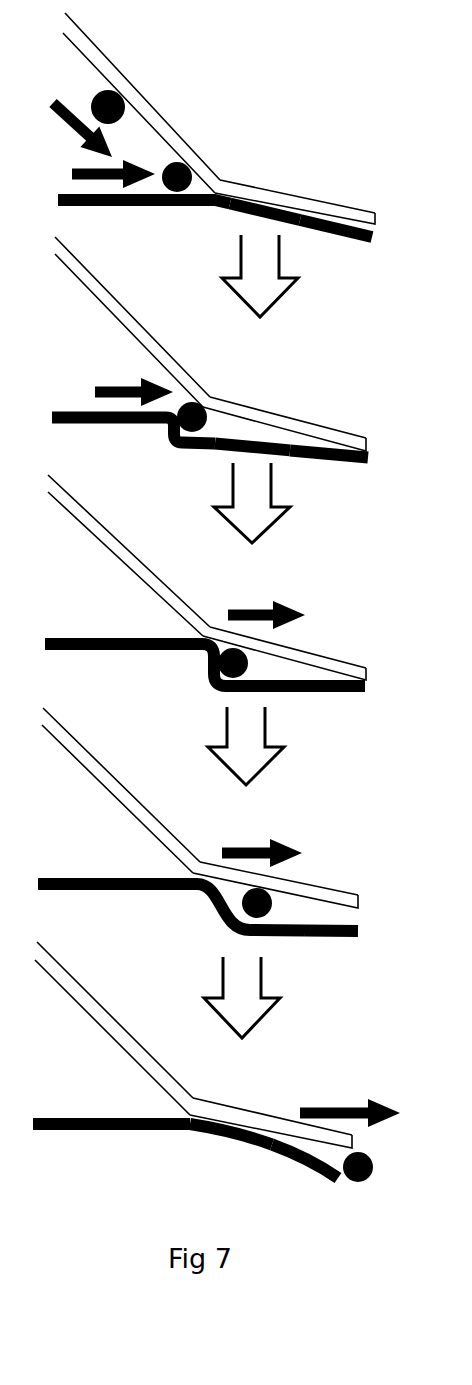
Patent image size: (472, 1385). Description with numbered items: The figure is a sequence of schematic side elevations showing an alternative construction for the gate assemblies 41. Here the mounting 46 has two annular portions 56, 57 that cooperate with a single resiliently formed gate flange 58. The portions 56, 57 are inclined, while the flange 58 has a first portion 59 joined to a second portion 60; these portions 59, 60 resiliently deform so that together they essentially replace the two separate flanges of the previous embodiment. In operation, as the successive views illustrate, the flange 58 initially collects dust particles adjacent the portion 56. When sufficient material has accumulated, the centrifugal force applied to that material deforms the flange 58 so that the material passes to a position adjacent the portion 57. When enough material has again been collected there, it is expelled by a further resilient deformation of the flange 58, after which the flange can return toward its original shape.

The gate assembly 41 is at (228, 580).
The mounting 46 is at (248, 180).
The annular portion 56 is at (165, 128).
The annular portion 57 is at (318, 205).
The gate flange 58 is at (298, 233).
The first portion 59 is at (123, 208).
The second portion 60 is at (357, 240).